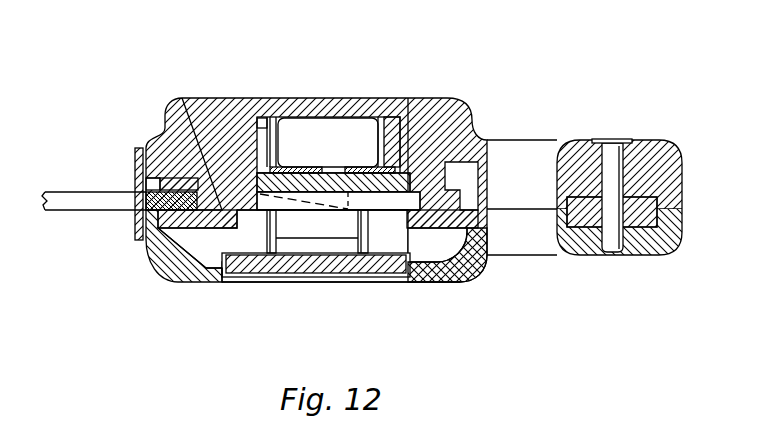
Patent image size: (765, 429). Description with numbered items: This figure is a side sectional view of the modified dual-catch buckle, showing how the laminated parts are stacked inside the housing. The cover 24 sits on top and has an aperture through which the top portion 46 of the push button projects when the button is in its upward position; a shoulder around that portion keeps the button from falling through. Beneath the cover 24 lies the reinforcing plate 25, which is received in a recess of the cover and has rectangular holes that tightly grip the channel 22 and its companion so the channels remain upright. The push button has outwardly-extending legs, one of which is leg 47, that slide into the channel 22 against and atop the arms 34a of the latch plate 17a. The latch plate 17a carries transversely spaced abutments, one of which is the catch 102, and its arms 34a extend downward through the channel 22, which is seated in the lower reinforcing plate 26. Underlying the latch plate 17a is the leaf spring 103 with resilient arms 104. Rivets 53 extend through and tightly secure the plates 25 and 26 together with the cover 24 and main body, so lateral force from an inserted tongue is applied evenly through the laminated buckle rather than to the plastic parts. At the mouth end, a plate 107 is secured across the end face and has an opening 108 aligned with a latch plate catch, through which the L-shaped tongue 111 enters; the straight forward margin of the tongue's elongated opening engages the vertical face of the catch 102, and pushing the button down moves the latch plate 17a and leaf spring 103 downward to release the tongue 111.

The latch plate 17a is at (458, 103).
The reinforcing plate 26 is at (176, 187).
The plate 107 is at (133, 170).
The tongue 111 is at (80, 203).
The opening 108 is at (155, 235).
The catch 102 is at (312, 192).
The resilient arms 104 is at (345, 132).
The leaf spring 103 is at (383, 160).
The rivets 53 is at (617, 163).
The reinforcing plate 25 is at (438, 228).
The cover 24 is at (432, 272).
The top portion of push button 46 is at (367, 266).
The leg 47 is at (335, 245).
The arms 34a is at (298, 230).
The channel 22 is at (268, 235).